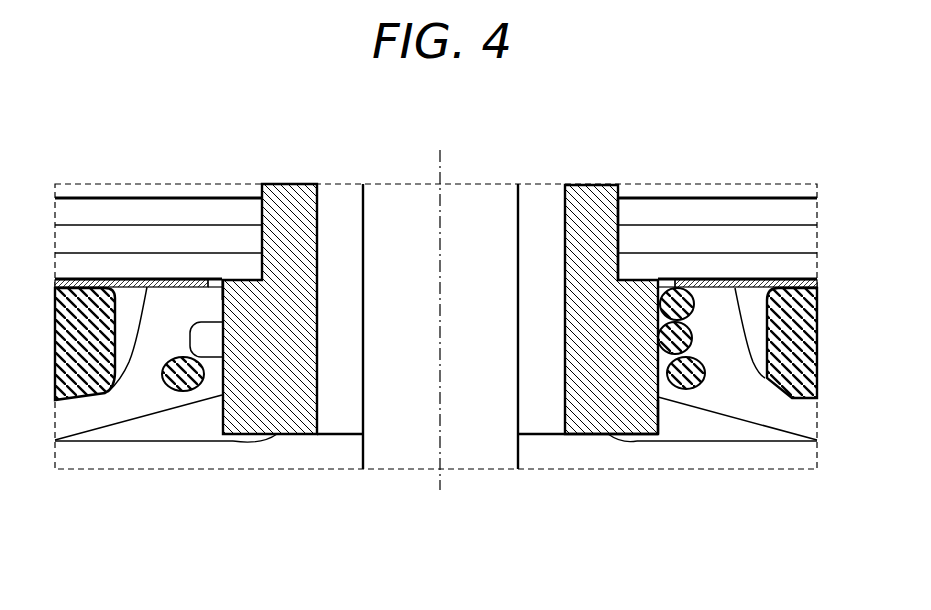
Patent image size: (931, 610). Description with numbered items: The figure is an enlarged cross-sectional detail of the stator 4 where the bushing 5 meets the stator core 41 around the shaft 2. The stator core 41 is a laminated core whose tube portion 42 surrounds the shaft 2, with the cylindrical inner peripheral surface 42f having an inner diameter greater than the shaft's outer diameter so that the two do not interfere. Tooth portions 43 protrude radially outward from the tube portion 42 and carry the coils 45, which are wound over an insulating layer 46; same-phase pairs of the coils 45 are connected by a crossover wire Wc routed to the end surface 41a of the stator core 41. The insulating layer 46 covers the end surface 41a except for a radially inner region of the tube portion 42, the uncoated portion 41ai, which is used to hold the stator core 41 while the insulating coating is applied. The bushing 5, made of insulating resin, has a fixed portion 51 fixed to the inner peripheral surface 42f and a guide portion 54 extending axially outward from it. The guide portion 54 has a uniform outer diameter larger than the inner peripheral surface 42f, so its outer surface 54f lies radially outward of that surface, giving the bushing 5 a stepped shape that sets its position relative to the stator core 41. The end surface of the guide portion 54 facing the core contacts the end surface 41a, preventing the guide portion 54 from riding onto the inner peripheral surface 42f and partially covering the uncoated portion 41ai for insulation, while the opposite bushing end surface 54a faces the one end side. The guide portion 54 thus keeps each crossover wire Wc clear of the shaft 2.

The shaft 2 is at (473, 478).
The stator 4 is at (774, 158).
The bushing 5 is at (594, 449).
The stator core 41 is at (724, 178).
The end surface 41a is at (167, 293).
The uncoated portion 41ai is at (243, 293).
The tube portion 42 is at (221, 184).
The inner peripheral surface 42f is at (619, 210).
The tooth portion 43 is at (80, 184).
The coil 45 is at (80, 404).
The insulating layer 46 is at (188, 289).
The fixed portion 51 is at (586, 185).
The guide portion 54 is at (577, 438).
The bushing end surface 54a is at (621, 440).
The outer surface 54f is at (661, 430).
The crossover wire Wc is at (167, 384).